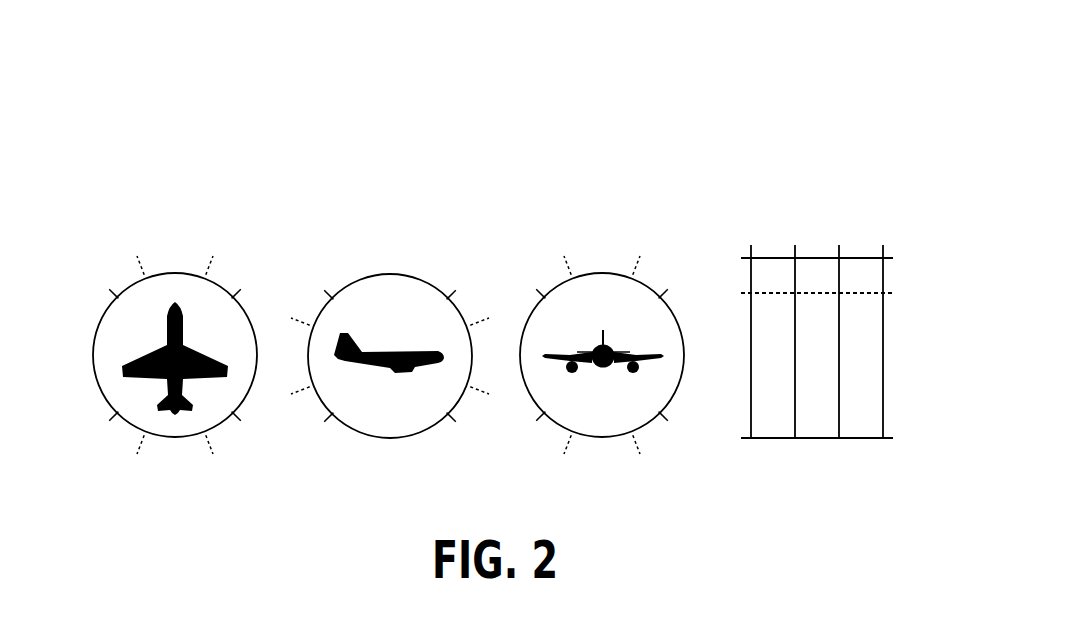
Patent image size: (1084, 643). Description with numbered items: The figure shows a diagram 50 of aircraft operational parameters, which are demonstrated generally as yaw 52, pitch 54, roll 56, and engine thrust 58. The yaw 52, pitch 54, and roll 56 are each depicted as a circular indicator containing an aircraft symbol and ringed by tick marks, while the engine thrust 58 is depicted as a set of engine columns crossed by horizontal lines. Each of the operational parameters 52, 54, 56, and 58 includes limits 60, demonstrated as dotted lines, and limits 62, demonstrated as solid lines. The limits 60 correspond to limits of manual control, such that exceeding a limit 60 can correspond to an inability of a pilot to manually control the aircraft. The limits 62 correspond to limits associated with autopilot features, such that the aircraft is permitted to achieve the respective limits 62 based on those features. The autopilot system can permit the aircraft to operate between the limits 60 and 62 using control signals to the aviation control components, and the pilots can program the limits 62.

The diagram of aircraft operational parameters 50 is at (121, 68).
The yaw 52 is at (175, 225).
The pitch 54 is at (388, 232).
The roll 56 is at (602, 232).
The engine thrust 58 is at (814, 224).
The limits 60 is at (212, 268).
The limits 62 is at (114, 423).